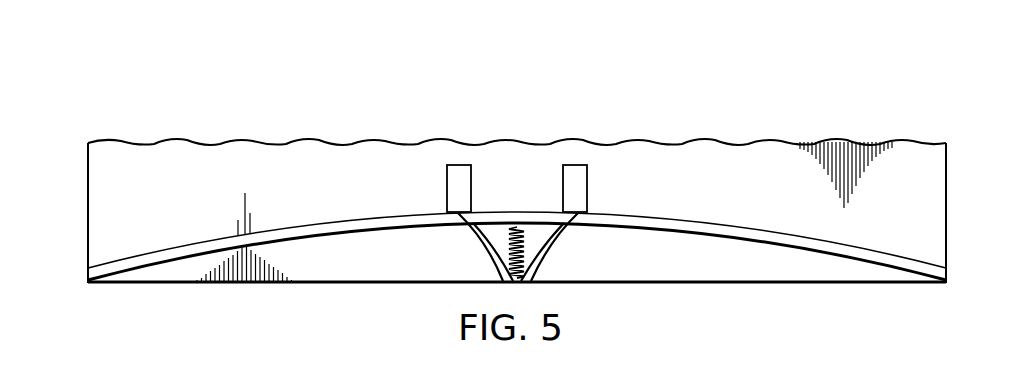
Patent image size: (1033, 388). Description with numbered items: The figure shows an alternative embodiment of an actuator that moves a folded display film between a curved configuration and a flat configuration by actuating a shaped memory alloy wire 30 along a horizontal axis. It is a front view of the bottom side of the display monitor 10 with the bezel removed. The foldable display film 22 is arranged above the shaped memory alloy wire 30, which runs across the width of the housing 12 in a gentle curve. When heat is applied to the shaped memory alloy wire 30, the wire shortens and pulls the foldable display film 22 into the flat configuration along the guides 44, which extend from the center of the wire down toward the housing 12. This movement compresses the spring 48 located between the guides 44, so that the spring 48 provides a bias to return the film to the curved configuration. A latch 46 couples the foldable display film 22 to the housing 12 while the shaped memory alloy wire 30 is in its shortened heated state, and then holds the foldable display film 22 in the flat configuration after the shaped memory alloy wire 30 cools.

The display monitor 10 is at (153, 74).
The housing 12 is at (88, 208).
The foldable display film 22 is at (196, 205).
The shaped memory alloy wire 30 is at (297, 226).
The guides 44 is at (480, 249).
The latch 46 is at (447, 190).
The spring 48 is at (517, 227).